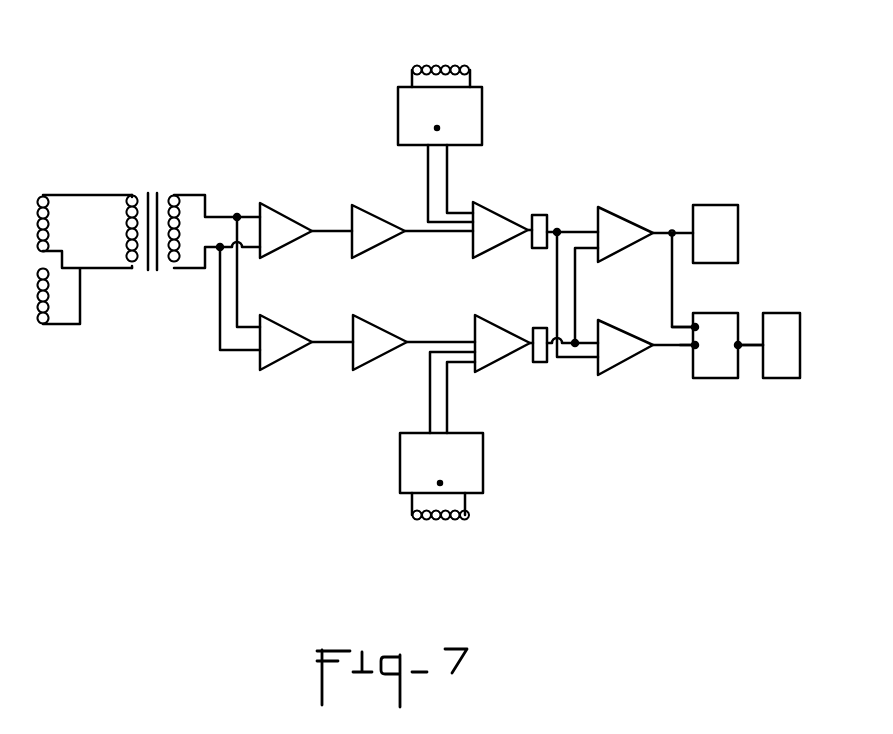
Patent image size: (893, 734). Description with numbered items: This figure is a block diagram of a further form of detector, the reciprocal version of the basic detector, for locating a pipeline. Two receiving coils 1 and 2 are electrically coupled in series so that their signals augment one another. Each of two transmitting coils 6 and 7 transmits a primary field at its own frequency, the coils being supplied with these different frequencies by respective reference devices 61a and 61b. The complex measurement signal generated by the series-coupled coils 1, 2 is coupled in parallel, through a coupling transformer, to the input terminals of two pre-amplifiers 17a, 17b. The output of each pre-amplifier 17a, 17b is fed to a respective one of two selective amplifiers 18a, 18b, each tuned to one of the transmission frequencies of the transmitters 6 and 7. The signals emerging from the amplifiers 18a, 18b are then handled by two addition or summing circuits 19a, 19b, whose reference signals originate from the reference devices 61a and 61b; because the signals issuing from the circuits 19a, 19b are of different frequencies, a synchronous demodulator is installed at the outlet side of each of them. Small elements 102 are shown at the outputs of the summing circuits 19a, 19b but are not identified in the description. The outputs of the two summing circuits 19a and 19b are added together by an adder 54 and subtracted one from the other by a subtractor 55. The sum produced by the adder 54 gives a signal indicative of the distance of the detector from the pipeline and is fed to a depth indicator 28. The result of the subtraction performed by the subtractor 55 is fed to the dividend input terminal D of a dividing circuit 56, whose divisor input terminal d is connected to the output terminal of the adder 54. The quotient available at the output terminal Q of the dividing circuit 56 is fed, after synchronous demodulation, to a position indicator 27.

The coil 1 is at (41, 208).
The coil 2 is at (48, 303).
The pre-amplifier 17a is at (278, 222).
The pre-amplifier 17b is at (278, 335).
The selective amplifier 18a is at (370, 220).
The selective amplifier 18b is at (377, 337).
The summing circuit 19a is at (495, 223).
The summing circuit 19b is at (498, 332).
The transmitting coil 6 is at (440, 63).
The transmitting coil 7 is at (447, 520).
The reference device 61a is at (440, 116).
The reference device 61b is at (441, 463).
The resistor 102 is at (540, 248).
The adder 54 is at (618, 228).
The subtractor 55 is at (615, 353).
The depth indicator 28 is at (715, 215).
The dividing circuit 56 is at (723, 365).
The position indicator 27 is at (780, 327).
The divisor input terminal d is at (697, 327).
The dividend input terminal D is at (695, 345).
The output terminal Q is at (738, 345).